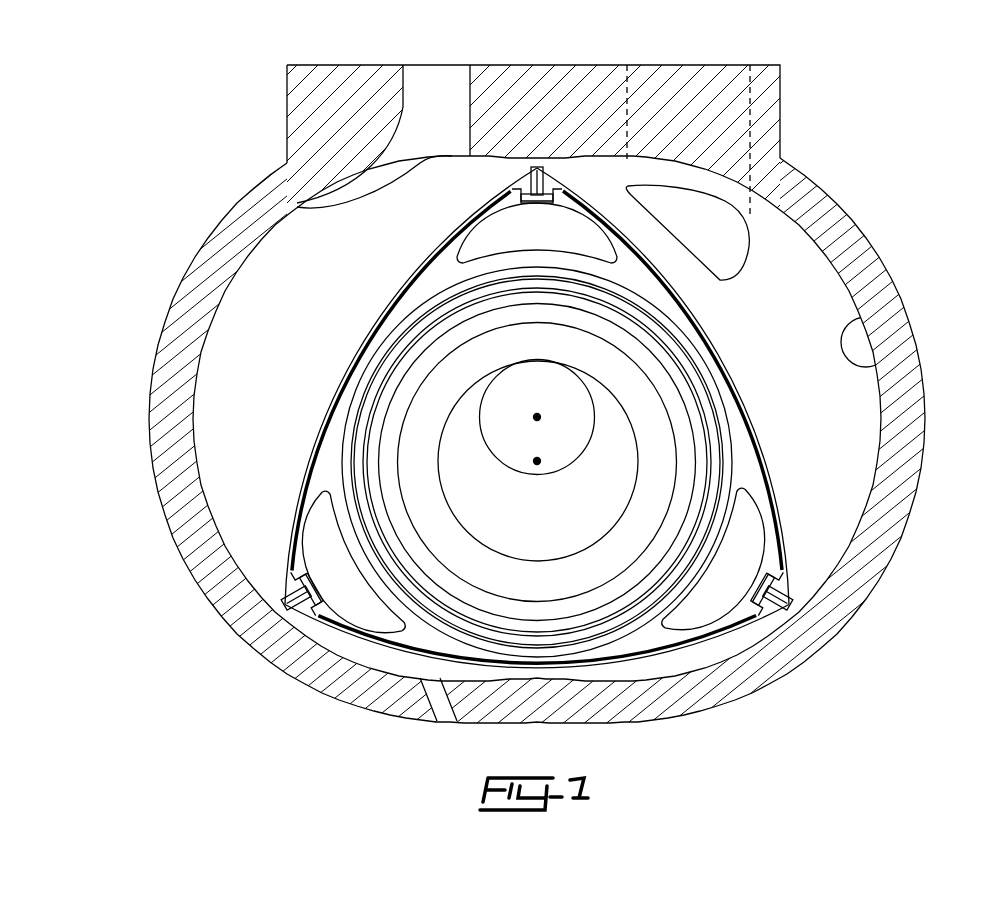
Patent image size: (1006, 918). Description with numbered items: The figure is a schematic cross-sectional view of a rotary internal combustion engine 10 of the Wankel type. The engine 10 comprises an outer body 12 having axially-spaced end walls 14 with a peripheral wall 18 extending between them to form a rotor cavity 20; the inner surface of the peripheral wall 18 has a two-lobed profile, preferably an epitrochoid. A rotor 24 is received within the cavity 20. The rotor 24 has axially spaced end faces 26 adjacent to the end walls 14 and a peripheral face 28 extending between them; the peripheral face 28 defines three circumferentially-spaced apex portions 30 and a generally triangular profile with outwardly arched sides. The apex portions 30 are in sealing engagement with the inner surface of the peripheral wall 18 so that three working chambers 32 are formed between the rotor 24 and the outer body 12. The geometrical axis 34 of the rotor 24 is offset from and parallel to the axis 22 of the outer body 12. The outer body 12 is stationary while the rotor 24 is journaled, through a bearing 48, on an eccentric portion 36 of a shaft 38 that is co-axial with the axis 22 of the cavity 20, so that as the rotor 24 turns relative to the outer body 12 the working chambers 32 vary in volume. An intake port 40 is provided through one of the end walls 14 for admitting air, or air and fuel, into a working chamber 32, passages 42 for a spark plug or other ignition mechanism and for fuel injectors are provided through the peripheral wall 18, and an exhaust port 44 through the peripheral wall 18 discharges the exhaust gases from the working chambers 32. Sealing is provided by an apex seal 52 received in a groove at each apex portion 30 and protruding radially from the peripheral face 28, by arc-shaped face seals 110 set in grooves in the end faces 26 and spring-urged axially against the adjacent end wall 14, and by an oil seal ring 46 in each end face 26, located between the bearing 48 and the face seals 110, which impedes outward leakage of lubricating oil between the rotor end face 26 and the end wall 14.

The rotary internal combustion engine 10 is at (153, 190).
The outer body 12 is at (860, 201).
The end walls 14 is at (820, 287).
The peripheral wall 18 is at (880, 373).
The rotor cavity 20 is at (861, 496).
The axis 22 is at (537, 417).
The rotor 24 is at (774, 436).
The end faces 26 is at (660, 622).
The peripheral face 28 is at (787, 558).
The apex portions 30 is at (812, 619).
The working chambers 32 is at (287, 312).
The geometrical axis 34 is at (537, 461).
The eccentric portion 36 is at (530, 525).
The shaft 38 is at (563, 457).
The intake port 40 is at (723, 232).
The passages 42 is at (372, 695).
The exhaust port 44 is at (297, 205).
The oil seal ring 46 is at (642, 595).
The bearing 48 is at (613, 578).
The apex seal 52 is at (290, 618).
The face seal 110 is at (297, 513).